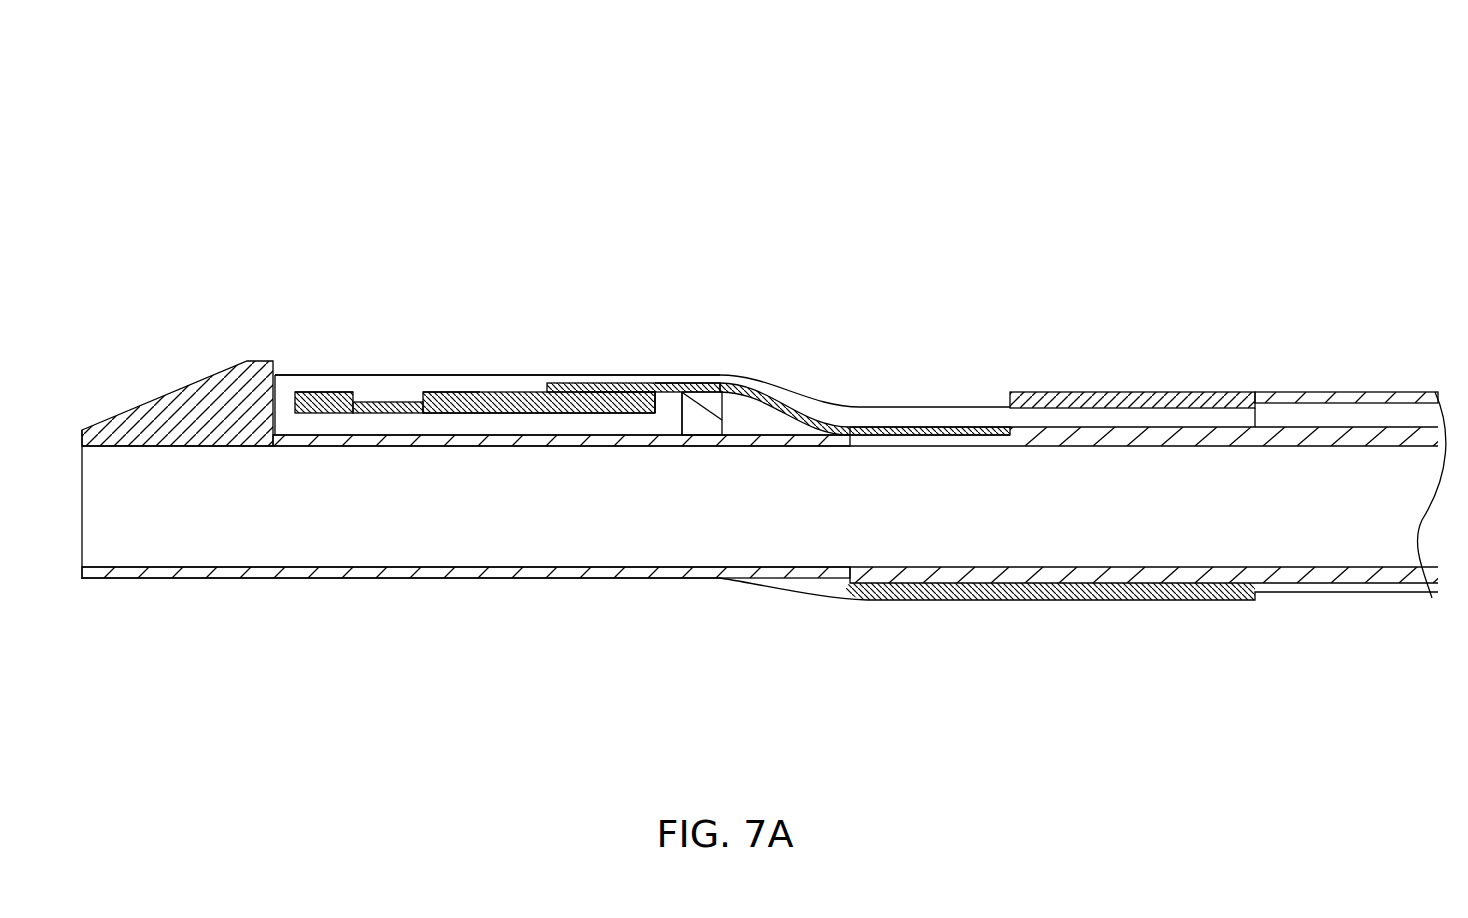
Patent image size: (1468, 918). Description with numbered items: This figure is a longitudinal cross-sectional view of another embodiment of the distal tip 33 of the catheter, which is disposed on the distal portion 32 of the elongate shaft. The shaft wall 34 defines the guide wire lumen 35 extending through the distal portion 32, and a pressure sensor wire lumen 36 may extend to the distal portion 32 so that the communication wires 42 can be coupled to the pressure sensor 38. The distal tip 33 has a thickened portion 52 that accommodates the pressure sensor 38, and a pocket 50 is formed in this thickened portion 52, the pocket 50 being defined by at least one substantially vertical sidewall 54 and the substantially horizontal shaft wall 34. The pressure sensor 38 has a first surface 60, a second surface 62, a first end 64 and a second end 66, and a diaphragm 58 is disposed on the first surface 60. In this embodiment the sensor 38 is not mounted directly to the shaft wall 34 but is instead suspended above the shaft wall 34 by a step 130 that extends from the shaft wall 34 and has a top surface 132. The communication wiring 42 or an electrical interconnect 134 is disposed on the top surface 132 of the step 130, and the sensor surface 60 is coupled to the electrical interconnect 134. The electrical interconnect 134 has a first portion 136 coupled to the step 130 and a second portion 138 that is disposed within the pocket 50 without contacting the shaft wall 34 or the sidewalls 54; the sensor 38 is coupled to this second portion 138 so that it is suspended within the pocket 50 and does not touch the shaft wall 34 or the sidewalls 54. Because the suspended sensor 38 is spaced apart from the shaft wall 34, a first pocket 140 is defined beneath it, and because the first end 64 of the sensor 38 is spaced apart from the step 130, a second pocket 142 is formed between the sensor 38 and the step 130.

The distal portion 32 is at (1012, 723).
The distal tip 33 is at (377, 184).
The shaft wall 34 is at (398, 447).
The guide wire lumen 35 is at (916, 521).
The pressure sensor wire lumen 36 is at (1408, 397).
The pressure sensor 38 is at (444, 401).
The communication wires 42 is at (850, 419).
The pocket 50 is at (552, 371).
The thickened portion 52 is at (217, 415).
The sidewall 54 is at (282, 373).
The diaphragm 58 is at (382, 393).
The first surface 60 is at (442, 393).
The second surface 62 is at (328, 414).
The first end 64 is at (607, 401).
The second end 66 is at (328, 396).
The step 130 is at (702, 416).
The top surface 132 is at (715, 387).
The electrical interconnect 134 is at (623, 386).
The first portion 136 is at (692, 381).
The second portion 138 is at (580, 371).
The first pocket 140 is at (515, 419).
The second pocket 142 is at (663, 418).